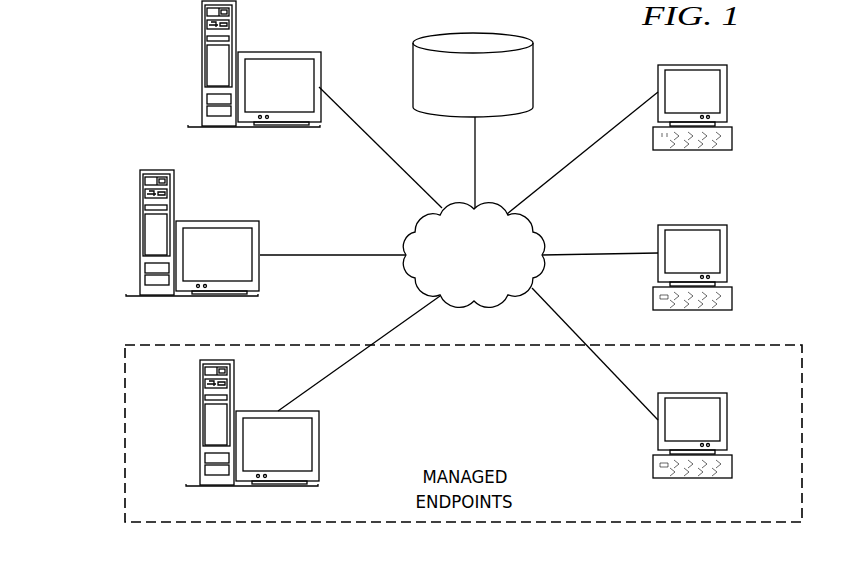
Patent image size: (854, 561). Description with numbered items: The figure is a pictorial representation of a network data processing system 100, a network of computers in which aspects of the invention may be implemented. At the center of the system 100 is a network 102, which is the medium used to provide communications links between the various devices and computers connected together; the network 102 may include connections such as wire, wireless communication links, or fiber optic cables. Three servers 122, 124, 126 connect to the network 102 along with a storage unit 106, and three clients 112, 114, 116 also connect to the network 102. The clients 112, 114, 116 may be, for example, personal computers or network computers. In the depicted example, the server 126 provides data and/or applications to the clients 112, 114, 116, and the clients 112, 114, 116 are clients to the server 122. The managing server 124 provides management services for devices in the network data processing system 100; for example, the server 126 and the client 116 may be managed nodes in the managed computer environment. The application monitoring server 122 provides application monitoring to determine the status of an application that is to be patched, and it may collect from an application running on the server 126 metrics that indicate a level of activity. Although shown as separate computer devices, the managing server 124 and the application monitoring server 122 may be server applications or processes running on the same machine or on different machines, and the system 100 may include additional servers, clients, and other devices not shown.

The network data processing system 100 is at (562, 72).
The network 102 is at (462, 209).
The storage unit 106 is at (413, 78).
The client 112 is at (727, 93).
The client 114 is at (727, 253).
The client 116 is at (727, 420).
The application monitoring server 122 is at (202, 65).
The managing server 124 is at (140, 232).
The server 126 is at (200, 423).